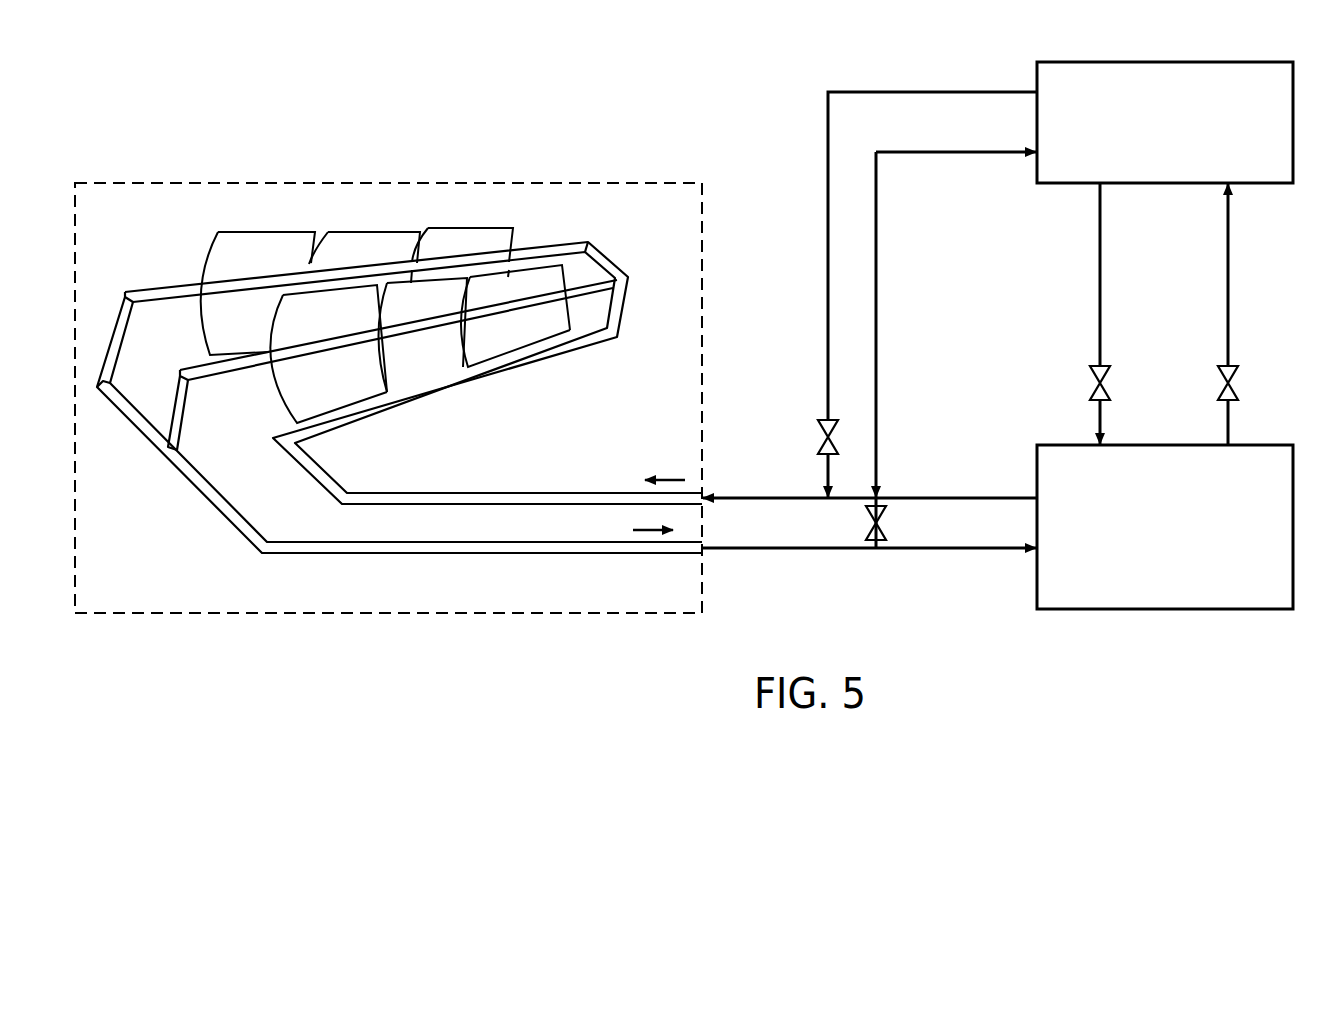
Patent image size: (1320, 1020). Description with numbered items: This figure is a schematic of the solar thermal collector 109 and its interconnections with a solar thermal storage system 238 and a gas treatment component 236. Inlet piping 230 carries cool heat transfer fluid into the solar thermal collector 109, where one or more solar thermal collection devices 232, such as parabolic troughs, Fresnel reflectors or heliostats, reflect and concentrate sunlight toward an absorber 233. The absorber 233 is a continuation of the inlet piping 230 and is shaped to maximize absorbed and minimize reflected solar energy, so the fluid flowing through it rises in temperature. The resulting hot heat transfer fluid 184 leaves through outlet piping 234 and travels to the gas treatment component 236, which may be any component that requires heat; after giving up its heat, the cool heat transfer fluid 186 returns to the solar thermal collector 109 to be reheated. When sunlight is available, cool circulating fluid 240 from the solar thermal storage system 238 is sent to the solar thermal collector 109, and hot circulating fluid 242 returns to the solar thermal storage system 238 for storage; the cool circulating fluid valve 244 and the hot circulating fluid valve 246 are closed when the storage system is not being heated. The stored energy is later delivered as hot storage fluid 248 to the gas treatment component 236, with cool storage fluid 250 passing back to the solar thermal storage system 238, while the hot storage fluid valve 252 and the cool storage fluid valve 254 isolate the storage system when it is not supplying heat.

The solar thermal collector 109 is at (388, 366).
The hot heat transfer fluid 184 is at (956, 549).
The cool heat transfer fluid 186 is at (956, 497).
The inlet piping 230 is at (526, 492).
The solar thermal collection devices 232 is at (472, 228).
The absorber 233 is at (507, 307).
The outlet piping 234 is at (487, 542).
The gas treatment component 236 is at (1163, 609).
The solar thermal storage system 238 is at (1163, 62).
The cool circulating fluid 240 is at (934, 92).
The hot circulating fluid 242 is at (878, 330).
The cool circulating fluid valve 244 is at (820, 445).
The hot circulating fluid valve 246 is at (867, 530).
The hot storage fluid 248 is at (1102, 278).
The cool storage fluid 250 is at (1231, 283).
The hot storage fluid valve 252 is at (1108, 375).
The cool storage fluid valve 254 is at (1238, 375).